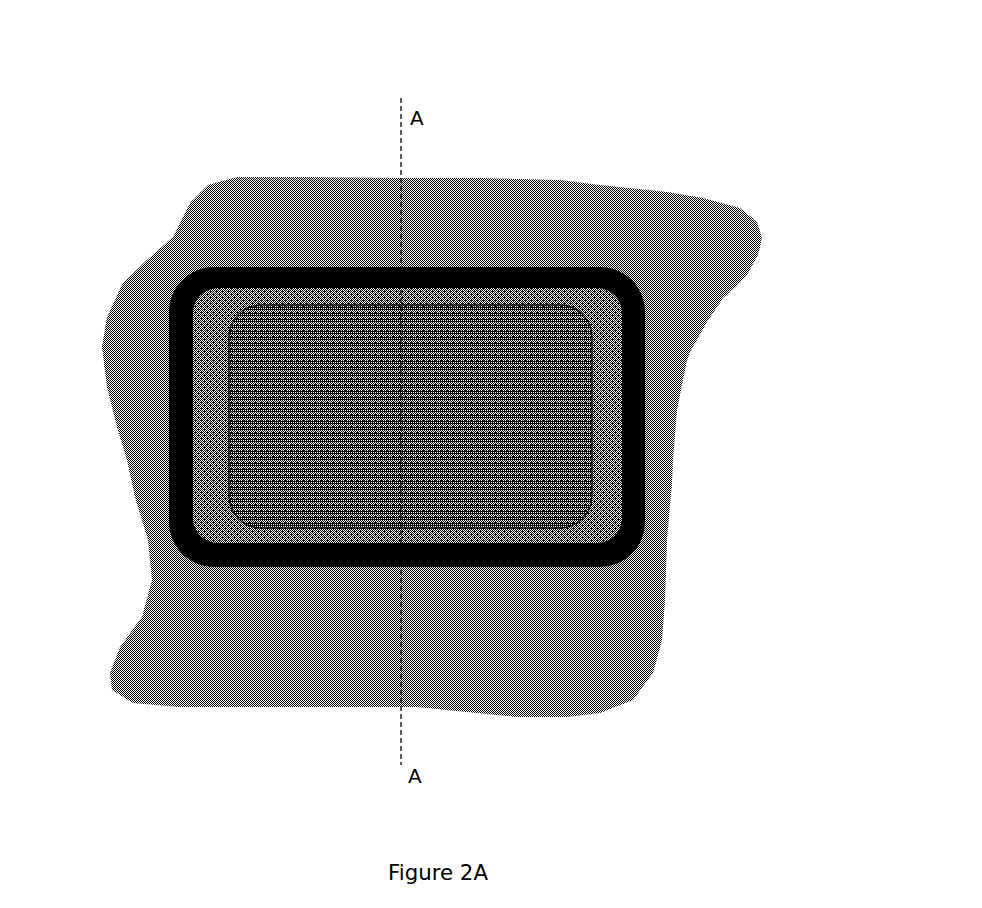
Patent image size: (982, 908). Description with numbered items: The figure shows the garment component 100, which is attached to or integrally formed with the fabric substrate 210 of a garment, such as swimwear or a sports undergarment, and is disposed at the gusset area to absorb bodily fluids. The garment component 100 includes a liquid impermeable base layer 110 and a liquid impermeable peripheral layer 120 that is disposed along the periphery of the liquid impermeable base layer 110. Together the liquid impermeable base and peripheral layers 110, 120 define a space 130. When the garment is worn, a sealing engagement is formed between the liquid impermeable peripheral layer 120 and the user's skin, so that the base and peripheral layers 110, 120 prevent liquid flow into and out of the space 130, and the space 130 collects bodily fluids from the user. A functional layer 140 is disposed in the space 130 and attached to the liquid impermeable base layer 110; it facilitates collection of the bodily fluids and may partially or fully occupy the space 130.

The garment component 100 is at (155, 119).
The liquid impermeable base layer 110 is at (613, 308).
The liquid impermeable peripheral layer 120 is at (660, 516).
The space 130 is at (591, 347).
The functional layer 140 is at (566, 403).
The fabric substrate 210 is at (527, 223).